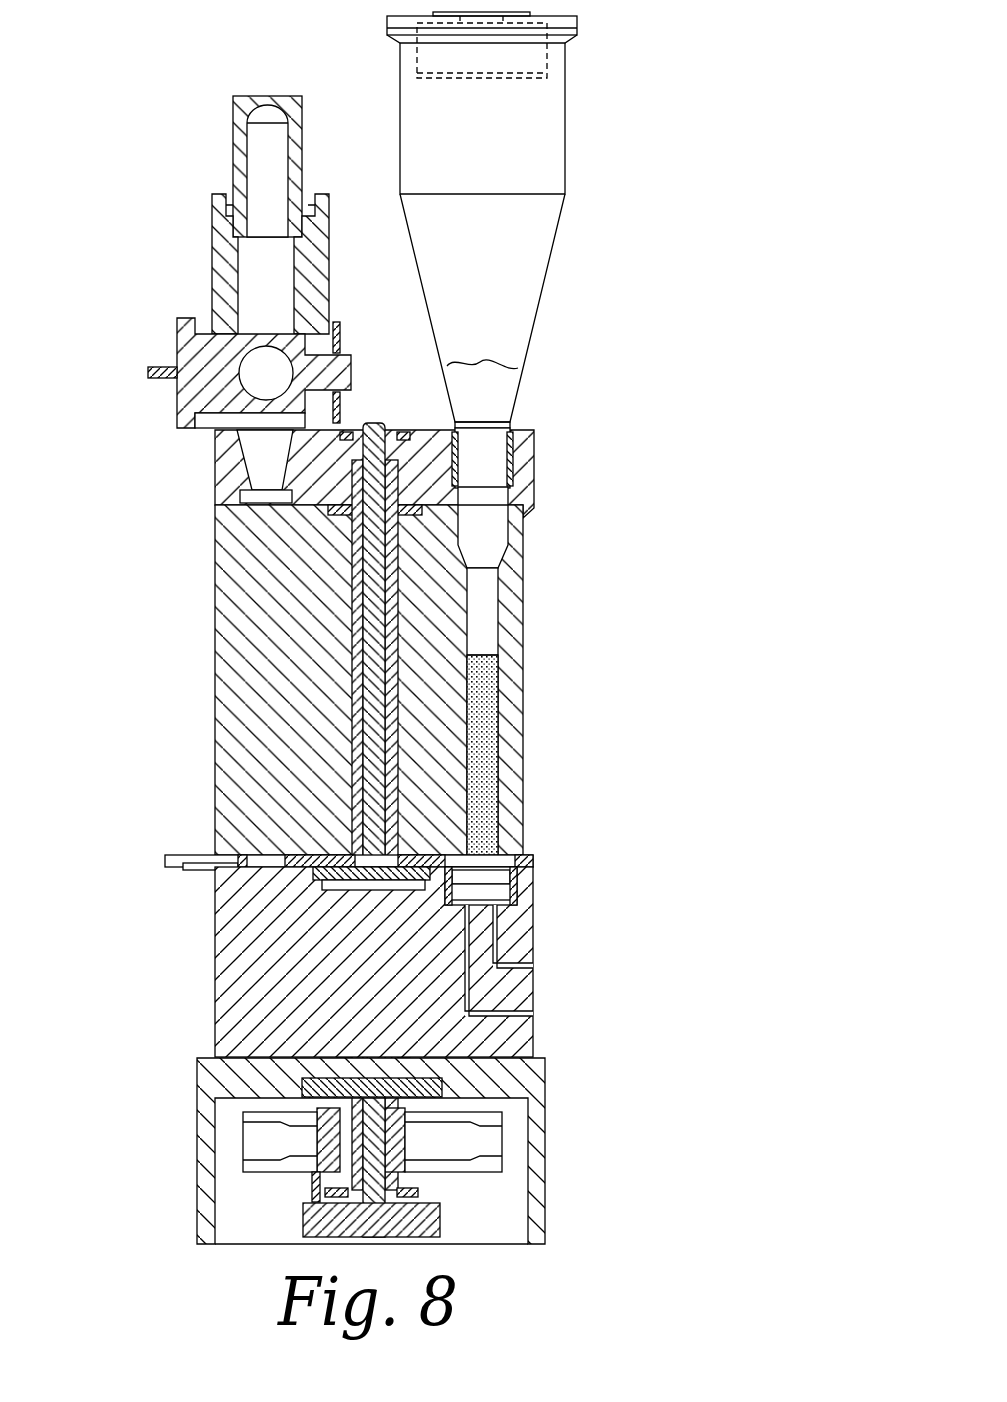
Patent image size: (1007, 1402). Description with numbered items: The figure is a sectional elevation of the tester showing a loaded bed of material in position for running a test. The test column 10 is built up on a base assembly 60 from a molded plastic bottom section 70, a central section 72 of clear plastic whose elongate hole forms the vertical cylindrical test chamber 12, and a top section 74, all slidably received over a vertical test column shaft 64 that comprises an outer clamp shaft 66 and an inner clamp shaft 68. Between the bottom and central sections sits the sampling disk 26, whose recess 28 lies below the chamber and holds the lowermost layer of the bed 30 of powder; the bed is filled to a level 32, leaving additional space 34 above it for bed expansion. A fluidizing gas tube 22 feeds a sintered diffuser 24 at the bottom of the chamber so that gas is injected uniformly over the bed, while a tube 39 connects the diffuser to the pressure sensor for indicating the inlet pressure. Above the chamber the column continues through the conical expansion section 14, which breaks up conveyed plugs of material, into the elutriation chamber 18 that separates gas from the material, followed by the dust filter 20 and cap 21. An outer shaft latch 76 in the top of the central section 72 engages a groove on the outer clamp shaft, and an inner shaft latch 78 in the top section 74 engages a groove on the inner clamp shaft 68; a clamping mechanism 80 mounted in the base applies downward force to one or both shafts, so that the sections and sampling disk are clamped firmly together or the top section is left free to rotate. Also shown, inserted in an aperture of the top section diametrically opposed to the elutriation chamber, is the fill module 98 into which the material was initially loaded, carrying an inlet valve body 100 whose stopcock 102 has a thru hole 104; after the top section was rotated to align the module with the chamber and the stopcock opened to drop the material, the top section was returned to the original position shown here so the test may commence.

The test column 10 is at (652, 505).
The test chamber 12 is at (483, 593).
The conical expansion section 14 is at (487, 556).
The elutriation chamber 18 is at (487, 394).
The dust filter 20 is at (547, 60).
The cap 21 is at (577, 25).
The fluidizing gas tube 22 is at (533, 1016).
The diffuser 24 is at (480, 895).
The sampling disk 26 is at (525, 860).
The recess 28 is at (265, 868).
The bed 30 is at (483, 759).
The level 32 is at (497, 652).
The additional space 34 is at (497, 638).
The tube 39 is at (533, 963).
The base assembly 60 is at (172, 1145).
The test column shaft 64 is at (415, 808).
The outer clamp shaft 66 is at (405, 722).
The inner clamp shaft 68 is at (383, 422).
The bottom section 70 is at (214, 982).
The central section 72 is at (214, 713).
The top section 74 is at (215, 462).
The outer shaft latch 76 is at (345, 515).
The inner shaft latch 78 is at (350, 428).
The clamping mechanism 80 is at (452, 1186).
The fill module 98 is at (233, 113).
The inlet valve body 100 is at (212, 253).
The stopcock 102 is at (177, 337).
The thru hole 104 is at (284, 388).